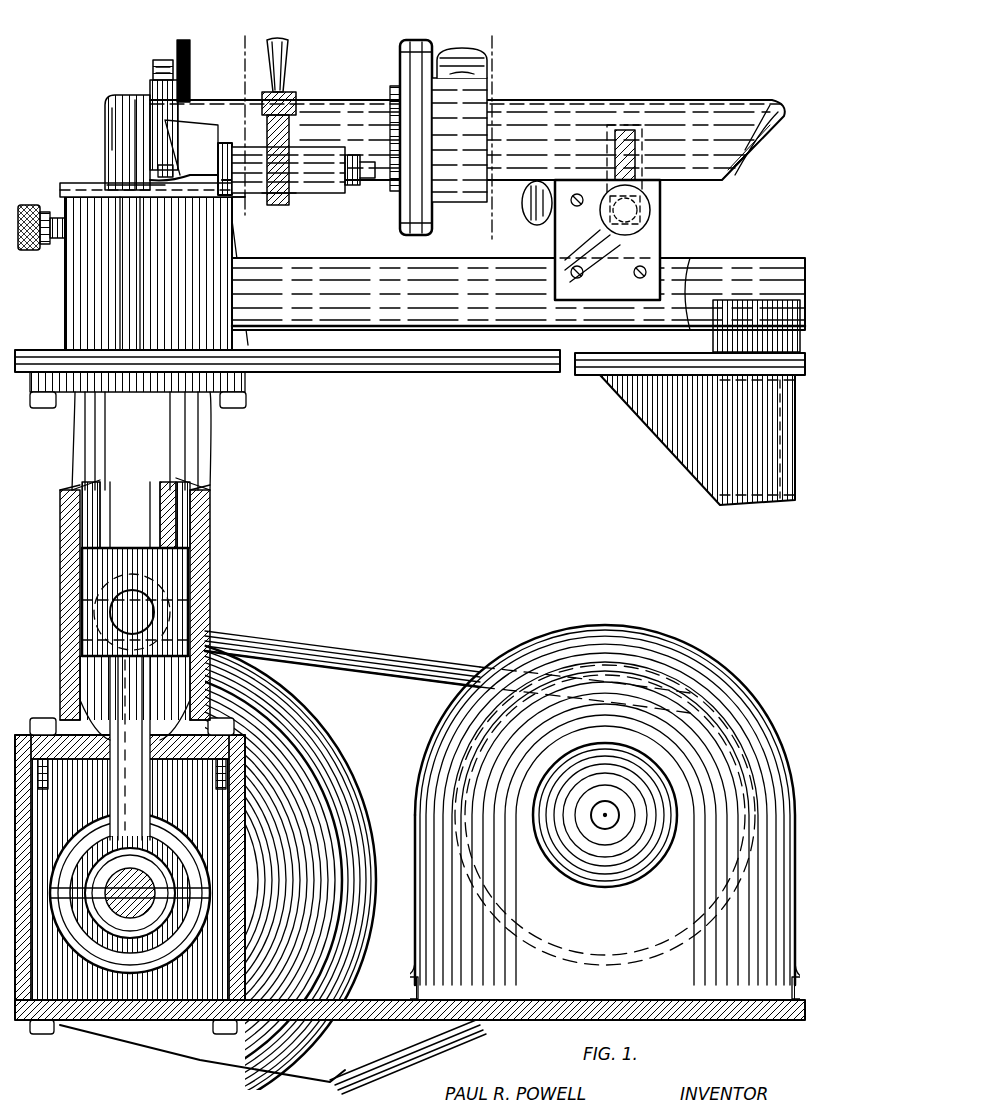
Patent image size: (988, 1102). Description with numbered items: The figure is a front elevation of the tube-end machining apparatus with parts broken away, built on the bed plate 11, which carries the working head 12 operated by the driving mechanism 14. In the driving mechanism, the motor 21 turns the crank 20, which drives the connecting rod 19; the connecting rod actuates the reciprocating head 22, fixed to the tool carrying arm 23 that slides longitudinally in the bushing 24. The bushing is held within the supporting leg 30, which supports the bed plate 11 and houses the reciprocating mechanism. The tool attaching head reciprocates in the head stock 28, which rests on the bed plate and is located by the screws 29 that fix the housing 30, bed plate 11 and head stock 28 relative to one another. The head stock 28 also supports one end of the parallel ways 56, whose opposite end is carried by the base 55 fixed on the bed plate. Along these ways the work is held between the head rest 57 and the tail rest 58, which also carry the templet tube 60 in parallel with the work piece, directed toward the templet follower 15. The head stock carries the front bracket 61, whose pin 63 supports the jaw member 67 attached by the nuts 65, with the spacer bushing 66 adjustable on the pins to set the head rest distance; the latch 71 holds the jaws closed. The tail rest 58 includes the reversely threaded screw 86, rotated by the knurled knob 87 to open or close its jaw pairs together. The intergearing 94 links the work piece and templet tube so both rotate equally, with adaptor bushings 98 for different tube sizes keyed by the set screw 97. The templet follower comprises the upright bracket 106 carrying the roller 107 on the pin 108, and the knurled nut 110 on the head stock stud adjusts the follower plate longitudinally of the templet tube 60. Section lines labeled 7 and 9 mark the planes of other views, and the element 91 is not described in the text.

The bed plate 11 is at (478, 372).
The working head 12 is at (553, 75).
The driving mechanism 14 is at (290, 603).
The templet follower 15 is at (132, 74).
The connecting rod 19 is at (215, 712).
The crank 20 is at (60, 1022).
The motor 21 is at (700, 658).
The reciprocating head 22 is at (190, 567).
The tool carrying shank or arm 23 is at (178, 520).
The bushing 24 is at (170, 492).
The head stock 28 is at (238, 246).
The screws 29 is at (246, 406).
The supporting leg / reciprocating mechanism housing 30 is at (210, 604).
The base 55 is at (714, 343).
The parallel ways 56 is at (468, 326).
The head rest 57 is at (330, 65).
The tail rest 58 is at (687, 216).
The templet tube 60 is at (672, 116).
The front bracket 61 is at (222, 142).
The pin 63 is at (356, 180).
The nuts 65 is at (366, 186).
The spacer bushing 66 is at (272, 200).
The jaw member 67 is at (292, 148).
The latch 71 is at (288, 52).
The section line 7 is at (488, 46).
The section line 9 is at (252, 46).
The reversely threaded screw 86 is at (632, 226).
The knurled knob 87 is at (645, 240).
The cam 91 is at (522, 204).
The intergearing 94 is at (376, 80).
The set screw 97 is at (488, 68).
The adaptor bushing 98 is at (392, 92).
The upright bracket 106 is at (105, 103).
The roller 107 is at (180, 100).
The pin 108 is at (158, 62).
The knurled nut 110 is at (30, 205).